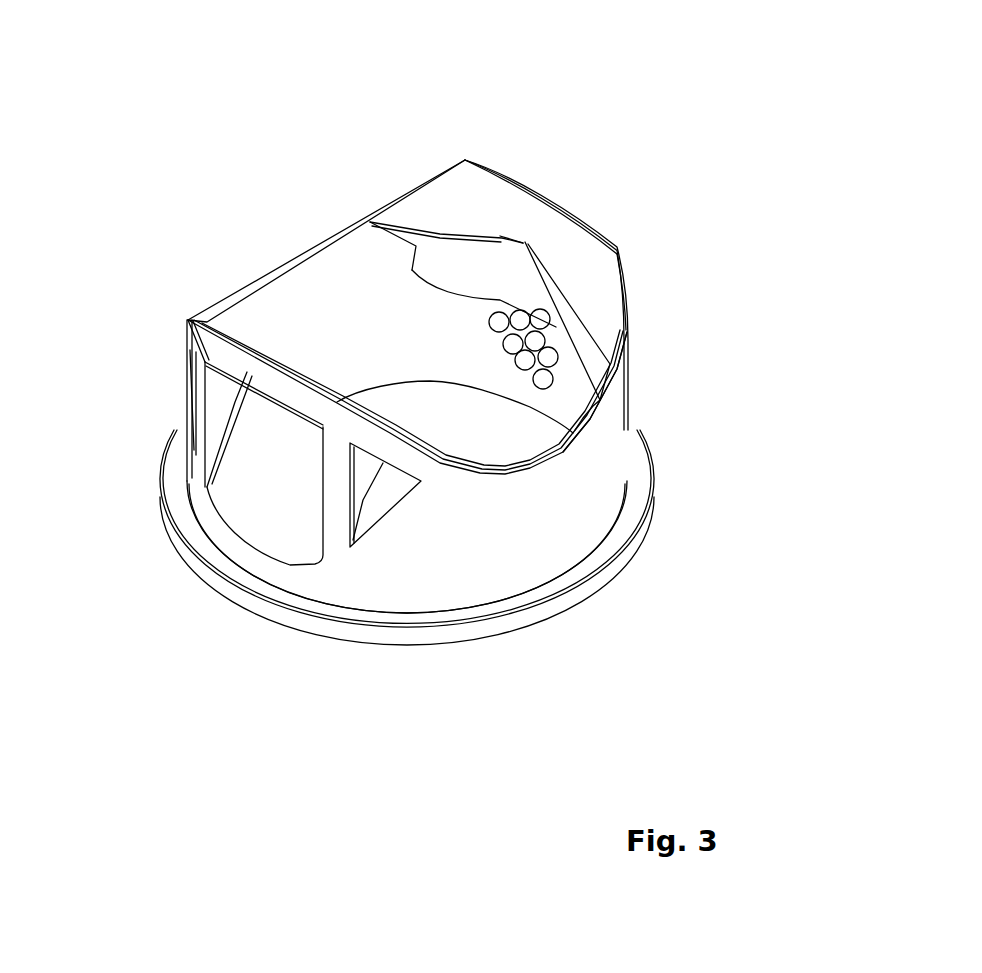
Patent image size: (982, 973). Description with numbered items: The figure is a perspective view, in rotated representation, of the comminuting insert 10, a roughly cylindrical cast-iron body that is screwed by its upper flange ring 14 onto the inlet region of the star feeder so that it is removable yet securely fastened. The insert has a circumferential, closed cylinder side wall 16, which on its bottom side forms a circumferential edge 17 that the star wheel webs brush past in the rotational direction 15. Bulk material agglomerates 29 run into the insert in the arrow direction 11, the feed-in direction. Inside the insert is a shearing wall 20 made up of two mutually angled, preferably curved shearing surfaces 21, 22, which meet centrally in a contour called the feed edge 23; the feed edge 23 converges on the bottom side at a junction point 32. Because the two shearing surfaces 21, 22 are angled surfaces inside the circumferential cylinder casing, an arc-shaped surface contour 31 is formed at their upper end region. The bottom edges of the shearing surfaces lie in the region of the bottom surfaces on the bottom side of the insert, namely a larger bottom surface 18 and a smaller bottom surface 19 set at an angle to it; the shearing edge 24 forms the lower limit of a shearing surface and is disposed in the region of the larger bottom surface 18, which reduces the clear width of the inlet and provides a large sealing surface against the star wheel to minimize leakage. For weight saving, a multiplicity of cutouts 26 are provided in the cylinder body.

The comminuting insert 10 is at (648, 118).
The arrow direction 11 is at (450, 380).
The flange ring 14 is at (623, 567).
The rotational direction 15 is at (380, 402).
The cylinder side wall 16 is at (478, 542).
The circumferential edge 17 is at (612, 383).
The larger bottom surface 18 is at (560, 252).
The smaller bottom surface 19 is at (508, 182).
The shearing wall 20 is at (487, 262).
The shearing surface 21 is at (441, 255).
The shearing surface 22 is at (585, 345).
The feed edge 23 is at (503, 232).
The shearing edge 24 is at (459, 248).
The cutouts 26 is at (218, 411).
The bulk material agglomerates 29 is at (555, 383).
The arc-shaped surface contour 31 is at (416, 246).
The junction point 32 is at (558, 253).